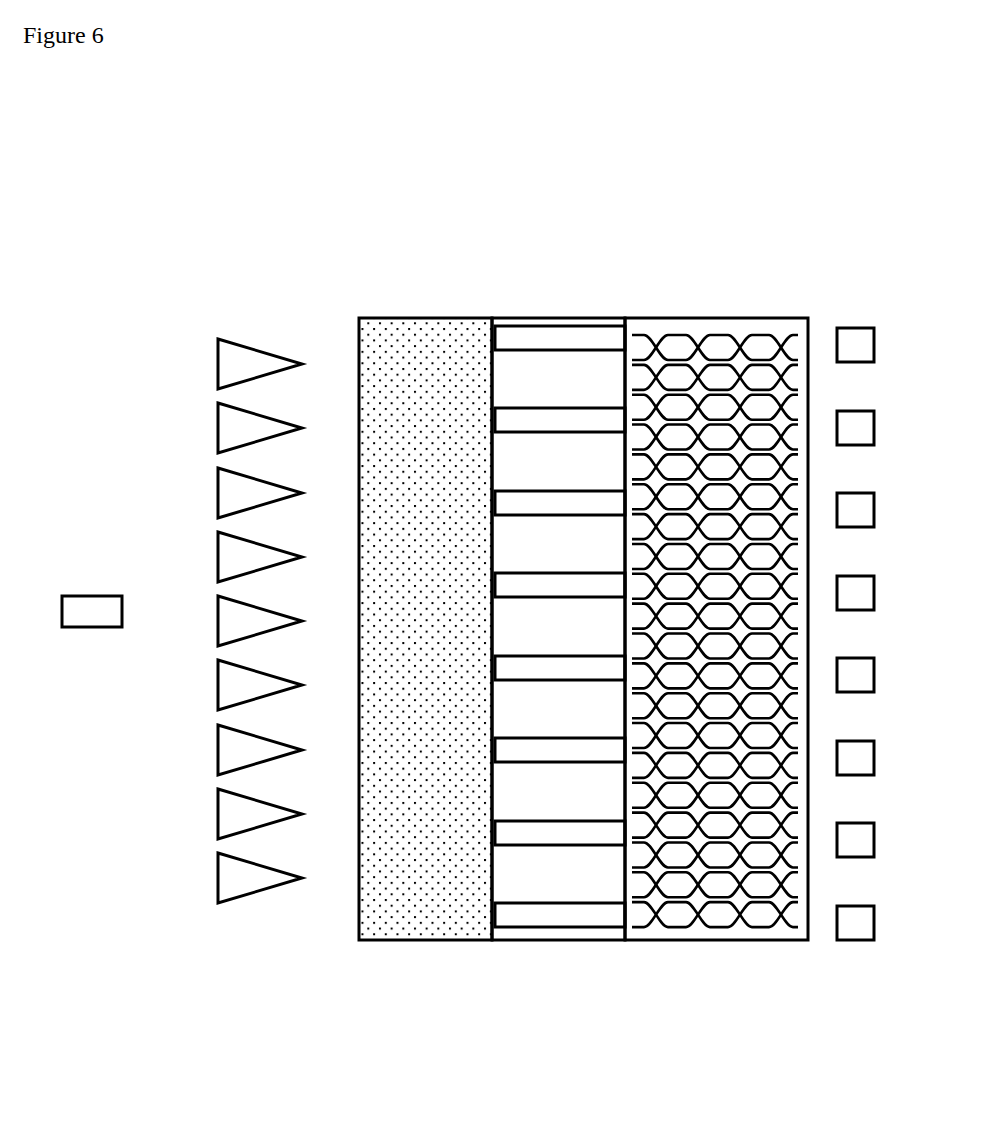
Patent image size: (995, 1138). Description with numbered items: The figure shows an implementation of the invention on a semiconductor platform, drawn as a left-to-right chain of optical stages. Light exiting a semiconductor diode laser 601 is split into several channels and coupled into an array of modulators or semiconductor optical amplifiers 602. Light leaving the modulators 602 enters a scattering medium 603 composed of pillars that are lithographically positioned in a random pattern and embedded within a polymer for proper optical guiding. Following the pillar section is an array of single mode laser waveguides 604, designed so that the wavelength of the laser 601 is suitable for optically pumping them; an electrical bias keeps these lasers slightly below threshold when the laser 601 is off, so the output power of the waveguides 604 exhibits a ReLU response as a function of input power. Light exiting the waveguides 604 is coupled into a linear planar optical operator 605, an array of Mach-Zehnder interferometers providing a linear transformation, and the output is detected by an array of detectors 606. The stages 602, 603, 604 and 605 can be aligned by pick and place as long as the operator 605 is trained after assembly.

The laser 601 is at (82, 643).
The array of modulators or semiconductor optical amplifiers 602 is at (233, 918).
The scattering medium 603 is at (410, 960).
The array of single mode laser waveguides 604 is at (547, 958).
The linear planar optical operator 605 is at (732, 955).
The detector elements 606 is at (857, 963).